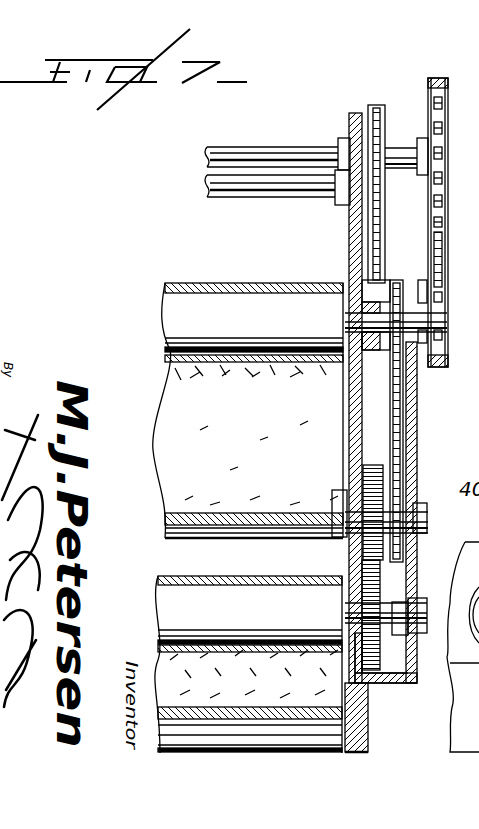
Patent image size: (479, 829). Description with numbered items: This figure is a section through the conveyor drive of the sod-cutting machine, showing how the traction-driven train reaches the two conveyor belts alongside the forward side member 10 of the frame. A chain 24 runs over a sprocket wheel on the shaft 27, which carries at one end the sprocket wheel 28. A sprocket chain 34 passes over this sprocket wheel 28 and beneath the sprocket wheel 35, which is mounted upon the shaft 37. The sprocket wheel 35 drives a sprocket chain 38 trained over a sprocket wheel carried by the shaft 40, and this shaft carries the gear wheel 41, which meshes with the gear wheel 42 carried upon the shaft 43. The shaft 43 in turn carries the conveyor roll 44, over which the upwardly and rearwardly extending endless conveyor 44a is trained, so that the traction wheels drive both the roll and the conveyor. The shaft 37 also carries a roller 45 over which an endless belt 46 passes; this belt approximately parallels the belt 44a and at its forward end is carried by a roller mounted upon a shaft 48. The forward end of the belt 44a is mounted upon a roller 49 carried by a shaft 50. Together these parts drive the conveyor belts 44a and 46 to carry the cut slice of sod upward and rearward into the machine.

The forward side member 10 is at (347, 257).
The chain 24 is at (375, 233).
The shaft 27 is at (263, 150).
The sprocket wheel 28 is at (442, 113).
The sprocket chain 34 is at (443, 243).
The sprocket wheel 35 is at (445, 313).
The shaft 37 is at (342, 323).
The sprocket chain 38 is at (393, 430).
The shaft 40 is at (418, 518).
The gear wheel 41 is at (373, 465).
The gear wheel 42 is at (383, 683).
The shaft 43 is at (418, 612).
The conveyor roll 44 is at (165, 609).
The endless elevator 44a is at (243, 577).
The roller 45 is at (170, 329).
The endless belt 46 is at (170, 403).
The shaft 48 is at (342, 490).
The roller 49 is at (410, 290).
The shaft 50 is at (367, 725).